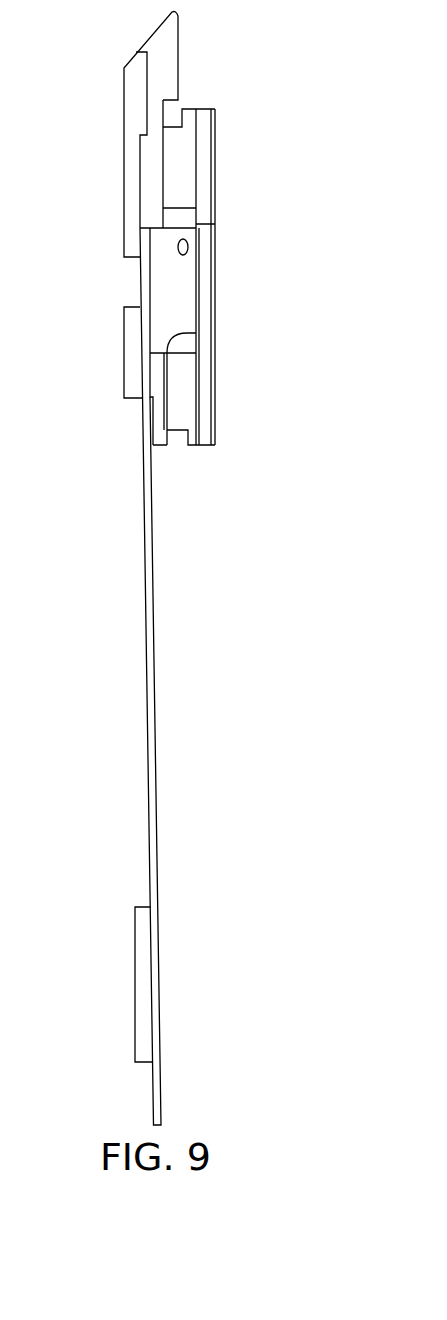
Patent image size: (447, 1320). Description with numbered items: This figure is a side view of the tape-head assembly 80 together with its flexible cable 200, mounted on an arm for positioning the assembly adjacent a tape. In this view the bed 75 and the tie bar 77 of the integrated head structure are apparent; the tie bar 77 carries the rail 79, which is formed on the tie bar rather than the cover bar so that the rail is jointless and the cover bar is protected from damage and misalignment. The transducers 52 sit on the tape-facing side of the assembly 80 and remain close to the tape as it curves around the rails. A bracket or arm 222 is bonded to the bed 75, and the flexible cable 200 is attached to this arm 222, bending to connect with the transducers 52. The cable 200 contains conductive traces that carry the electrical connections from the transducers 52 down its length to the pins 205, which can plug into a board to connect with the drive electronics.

The tape-head assembly 80 is at (262, 70).
The bracket or arm 222 is at (124, 312).
The rail 79 is at (214, 163).
The transducers 52 is at (216, 276).
The tie bar 77 is at (205, 391).
The bed 75 is at (175, 431).
The flexible cable 200 is at (162, 330).
The pins 205 is at (138, 990).